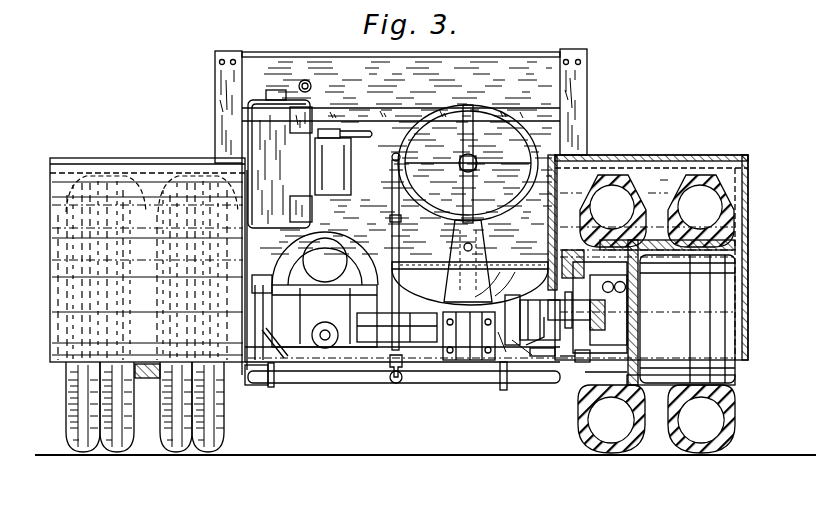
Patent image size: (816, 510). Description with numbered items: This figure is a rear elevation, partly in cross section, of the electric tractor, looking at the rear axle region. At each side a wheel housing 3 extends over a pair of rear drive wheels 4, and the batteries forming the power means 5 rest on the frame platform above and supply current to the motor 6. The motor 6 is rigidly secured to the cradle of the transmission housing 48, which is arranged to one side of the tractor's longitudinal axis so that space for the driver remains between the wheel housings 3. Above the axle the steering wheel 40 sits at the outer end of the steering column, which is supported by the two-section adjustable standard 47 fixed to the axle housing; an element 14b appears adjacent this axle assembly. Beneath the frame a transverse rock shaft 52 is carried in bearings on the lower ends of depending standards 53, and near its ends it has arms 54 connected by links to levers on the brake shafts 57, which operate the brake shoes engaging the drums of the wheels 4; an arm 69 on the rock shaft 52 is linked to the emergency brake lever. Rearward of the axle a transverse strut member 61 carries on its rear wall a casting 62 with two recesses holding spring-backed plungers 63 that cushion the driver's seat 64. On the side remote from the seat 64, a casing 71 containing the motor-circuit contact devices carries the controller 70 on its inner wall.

The housing 3 is at (158, 163).
The rear drive wheel 4 is at (722, 208).
The power means 5 is at (555, 97).
The motor 6 is at (282, 268).
The axle 14b is at (575, 365).
The steering wheel 40 is at (434, 118).
The standard 47 is at (482, 244).
The housing 48 is at (300, 318).
The rock shaft 52 is at (430, 366).
The standard 53 is at (252, 386).
The arm 54 is at (530, 345).
The shaft 57 is at (548, 356).
The transverse strut member 61 is at (442, 355).
The casting 62 is at (490, 386).
The plunger 63 is at (460, 310).
The driver's seat 64 is at (520, 262).
The arm 69 is at (395, 383).
The controller 70 is at (345, 172).
The casing 71 is at (255, 122).